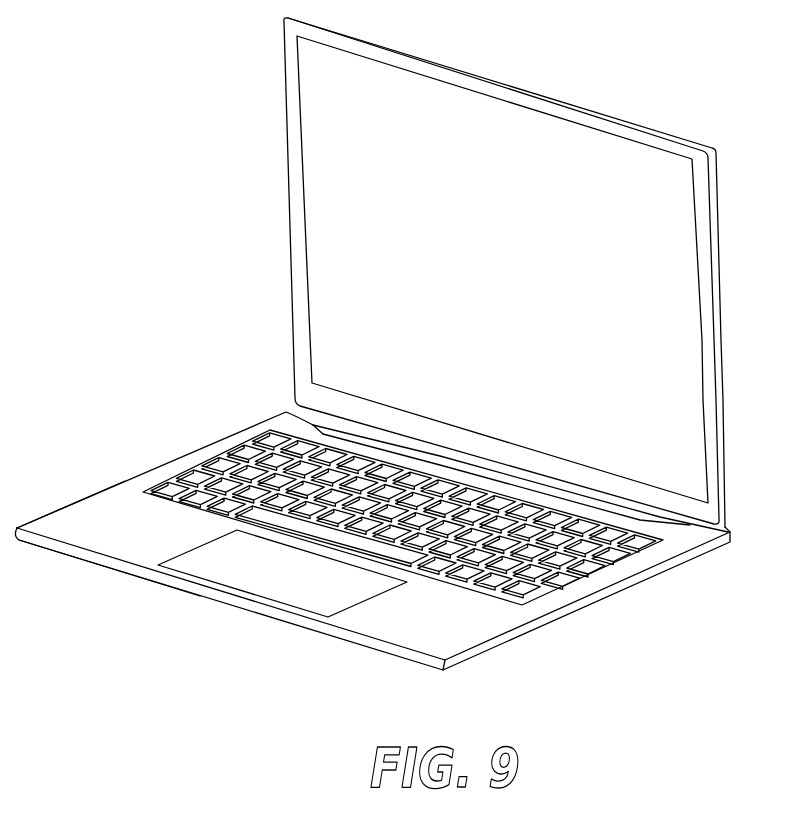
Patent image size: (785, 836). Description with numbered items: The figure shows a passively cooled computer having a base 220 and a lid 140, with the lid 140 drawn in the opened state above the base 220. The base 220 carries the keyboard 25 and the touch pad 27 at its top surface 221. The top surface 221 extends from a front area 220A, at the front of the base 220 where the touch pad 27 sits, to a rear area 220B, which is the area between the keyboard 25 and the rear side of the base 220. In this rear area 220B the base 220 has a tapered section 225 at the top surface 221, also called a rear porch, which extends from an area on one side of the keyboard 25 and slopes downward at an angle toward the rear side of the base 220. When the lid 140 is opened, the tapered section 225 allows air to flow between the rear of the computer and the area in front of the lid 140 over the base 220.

The lid 140 is at (332, 195).
The base 220 is at (127, 482).
The front area 220A is at (53, 525).
The rear area 220B is at (300, 413).
The tapered section 225 is at (300, 427).
The top surface 221 is at (127, 548).
The touch pad 27 is at (230, 577).
The keyboard 25 is at (563, 563).